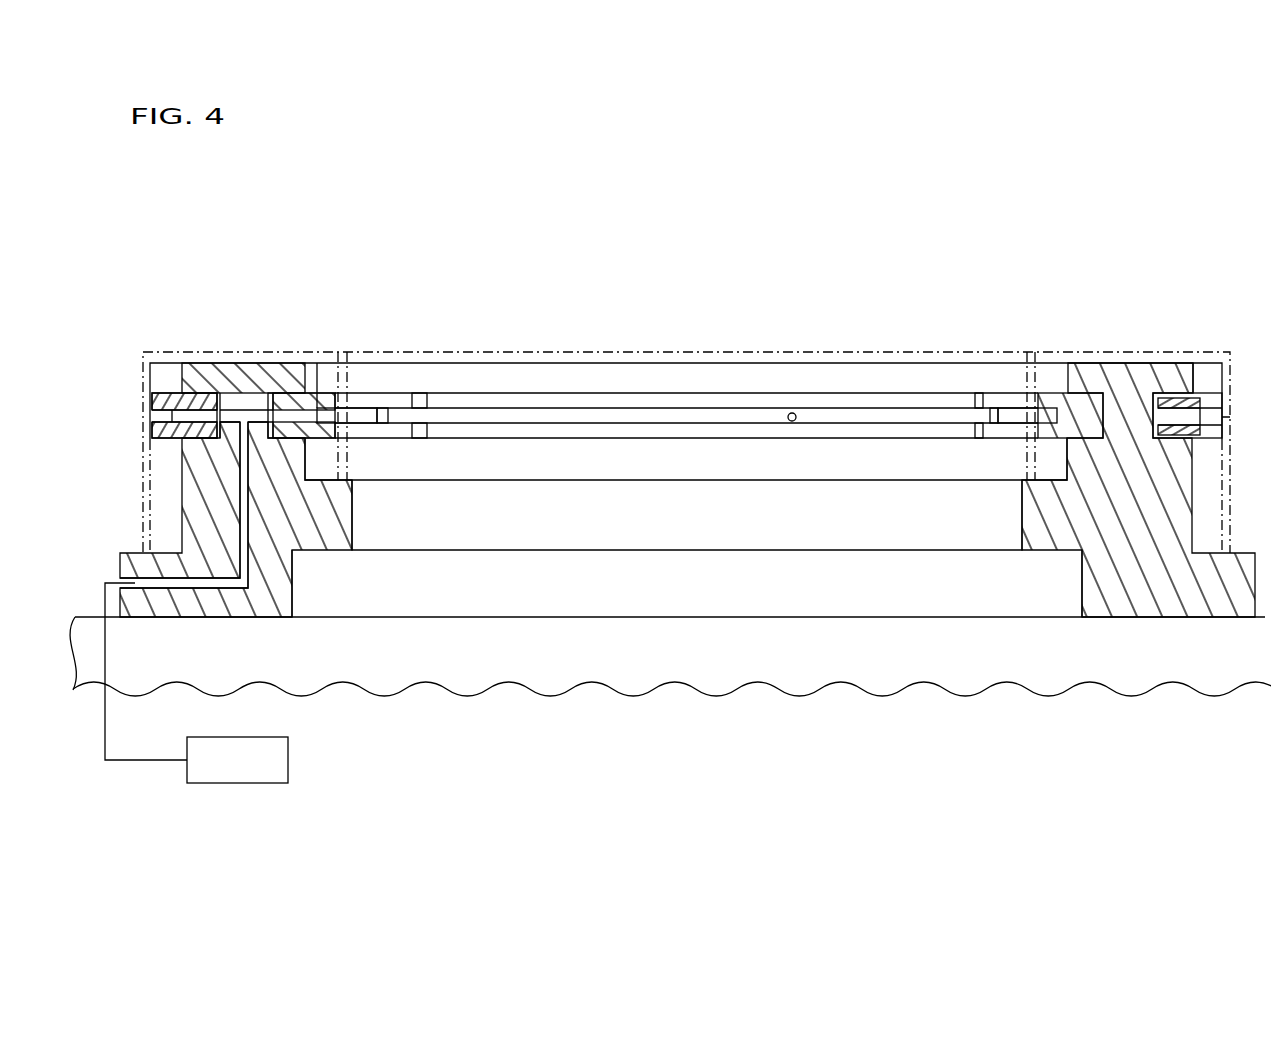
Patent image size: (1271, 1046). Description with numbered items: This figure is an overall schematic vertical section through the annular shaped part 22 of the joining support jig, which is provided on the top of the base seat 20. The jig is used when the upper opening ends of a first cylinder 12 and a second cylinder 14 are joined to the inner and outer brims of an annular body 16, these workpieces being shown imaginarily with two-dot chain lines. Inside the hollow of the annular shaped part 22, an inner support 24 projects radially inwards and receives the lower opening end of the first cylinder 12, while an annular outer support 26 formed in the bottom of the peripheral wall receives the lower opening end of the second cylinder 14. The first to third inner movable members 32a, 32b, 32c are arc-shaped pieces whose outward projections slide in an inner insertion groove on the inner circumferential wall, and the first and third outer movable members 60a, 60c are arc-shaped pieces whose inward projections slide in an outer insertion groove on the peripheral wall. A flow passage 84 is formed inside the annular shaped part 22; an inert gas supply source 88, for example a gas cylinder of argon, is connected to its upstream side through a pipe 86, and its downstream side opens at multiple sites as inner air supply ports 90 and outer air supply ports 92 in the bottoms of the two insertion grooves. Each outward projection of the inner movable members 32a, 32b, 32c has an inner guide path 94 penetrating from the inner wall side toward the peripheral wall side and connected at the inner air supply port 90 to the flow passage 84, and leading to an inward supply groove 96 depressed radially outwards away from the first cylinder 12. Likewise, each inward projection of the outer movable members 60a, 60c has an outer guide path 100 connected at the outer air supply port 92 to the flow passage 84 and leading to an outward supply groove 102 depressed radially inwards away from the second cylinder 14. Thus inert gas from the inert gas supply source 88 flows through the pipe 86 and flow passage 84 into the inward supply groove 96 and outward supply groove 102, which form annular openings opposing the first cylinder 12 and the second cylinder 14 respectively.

The first cylinder 12 is at (348, 450).
The second cylinder 14 is at (142, 485).
The annular body 16 is at (142, 377).
The base seat 20 is at (624, 678).
The annular shaped part 22 is at (1142, 362).
The inner support 24 is at (335, 515).
The outer support 26 is at (128, 565).
The first inner movable member 32a is at (317, 410).
The second inner movable member 32b is at (597, 400).
The third inner movable member 32c is at (1080, 391).
The first outer movable member 60a is at (160, 393).
The third outer movable member 60c is at (1207, 393).
The flow passage 84 is at (245, 520).
The pipe 86 is at (138, 762).
The inert gas supply source 88 is at (218, 783).
The inner air supply port 90 is at (298, 398).
The outer air supply port 92 is at (193, 417).
The inner guide path 94 is at (294, 415).
The inward supply groove 96 is at (365, 415).
The outer guide path 100 is at (190, 405).
The outward supply groove 102 is at (150, 416).